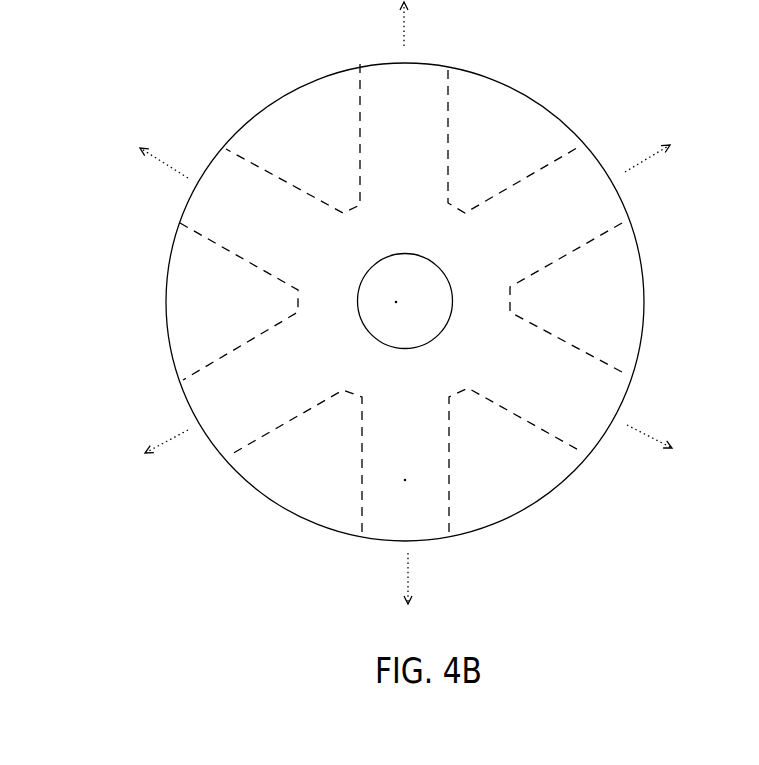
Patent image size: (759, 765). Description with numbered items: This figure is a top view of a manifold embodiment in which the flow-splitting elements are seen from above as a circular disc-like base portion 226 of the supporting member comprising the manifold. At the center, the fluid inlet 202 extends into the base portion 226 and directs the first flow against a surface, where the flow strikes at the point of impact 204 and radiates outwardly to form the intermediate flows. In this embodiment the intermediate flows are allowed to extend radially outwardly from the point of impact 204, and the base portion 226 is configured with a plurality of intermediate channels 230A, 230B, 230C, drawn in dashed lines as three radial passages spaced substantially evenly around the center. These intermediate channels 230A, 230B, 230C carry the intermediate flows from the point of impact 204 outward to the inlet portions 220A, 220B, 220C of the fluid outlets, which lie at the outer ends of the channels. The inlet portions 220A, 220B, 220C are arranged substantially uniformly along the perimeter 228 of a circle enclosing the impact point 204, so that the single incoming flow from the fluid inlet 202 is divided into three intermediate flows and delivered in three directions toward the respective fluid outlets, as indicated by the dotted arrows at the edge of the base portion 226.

The fluid inlet 202 is at (380, 255).
The point of impact 204 is at (395, 302).
The base portion 226 is at (643, 283).
The perimeter 228 is at (455, 208).
The inlet portion 220A is at (625, 397).
The inlet portion 220B is at (423, 540).
The inlet portion 220C is at (183, 393).
The intermediate channel 230A is at (552, 387).
The intermediate channel 230B is at (410, 457).
The intermediate channel 230C is at (258, 405).